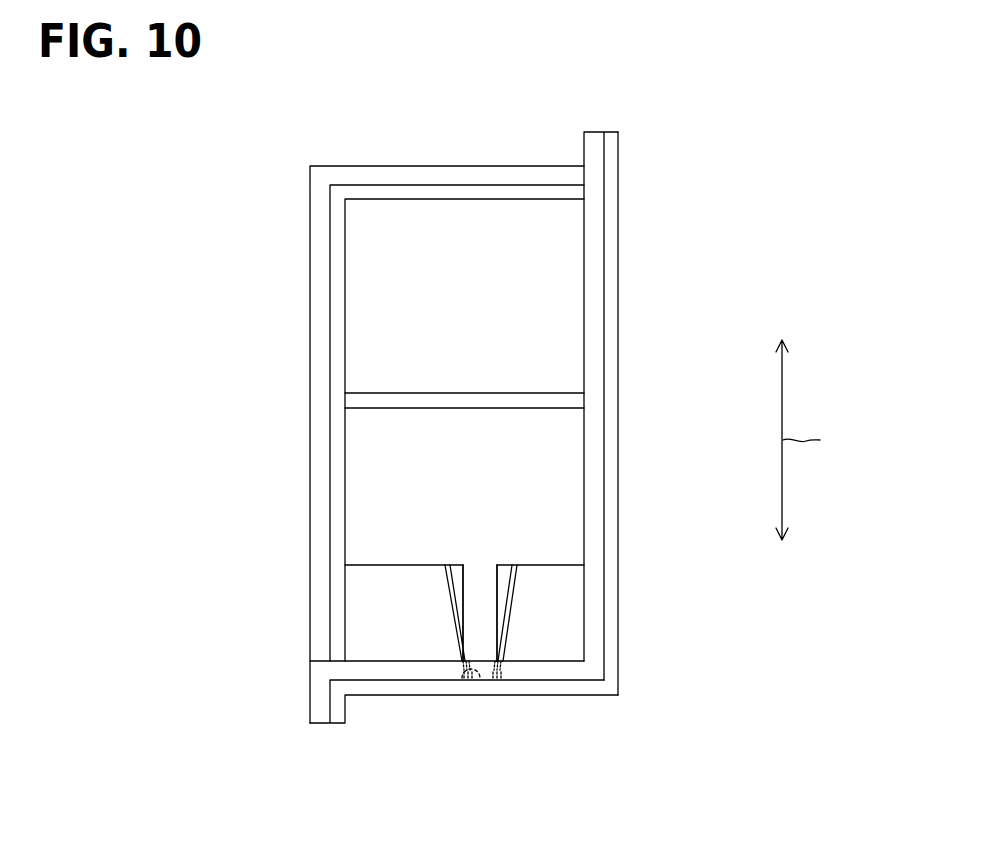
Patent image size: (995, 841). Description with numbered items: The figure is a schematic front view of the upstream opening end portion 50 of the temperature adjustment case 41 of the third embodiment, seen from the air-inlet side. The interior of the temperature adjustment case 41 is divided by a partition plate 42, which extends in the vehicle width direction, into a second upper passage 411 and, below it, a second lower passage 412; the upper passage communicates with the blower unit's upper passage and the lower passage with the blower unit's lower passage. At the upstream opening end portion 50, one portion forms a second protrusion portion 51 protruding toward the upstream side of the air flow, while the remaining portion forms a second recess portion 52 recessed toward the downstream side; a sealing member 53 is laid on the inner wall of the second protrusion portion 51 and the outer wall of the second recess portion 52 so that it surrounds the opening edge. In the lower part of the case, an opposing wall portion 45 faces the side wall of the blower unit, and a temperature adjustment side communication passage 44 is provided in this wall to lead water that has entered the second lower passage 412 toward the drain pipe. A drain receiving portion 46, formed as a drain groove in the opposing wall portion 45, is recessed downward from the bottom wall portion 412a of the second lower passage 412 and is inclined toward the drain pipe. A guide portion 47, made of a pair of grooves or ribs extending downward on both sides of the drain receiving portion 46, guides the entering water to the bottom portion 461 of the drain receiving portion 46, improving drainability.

The temperature adjustment case 41 is at (565, 115).
The upstream opening end portion 50 is at (455, 165).
The sealing member 53 is at (320, 233).
The second recess portion 52 is at (338, 297).
The second protrusion portion 51 is at (613, 278).
The second upper passage 411 is at (378, 338).
The partition plate 42 is at (527, 398).
The second lower passage 412 is at (378, 437).
The bottom wall portion 412a is at (370, 565).
The temperature adjustment side communication passage 44 is at (480, 587).
The guide portion 47 is at (450, 610).
The bottom portion 461 is at (455, 680).
The drain receiving portion 46 is at (493, 628).
The opposing wall portion 45 is at (560, 645).